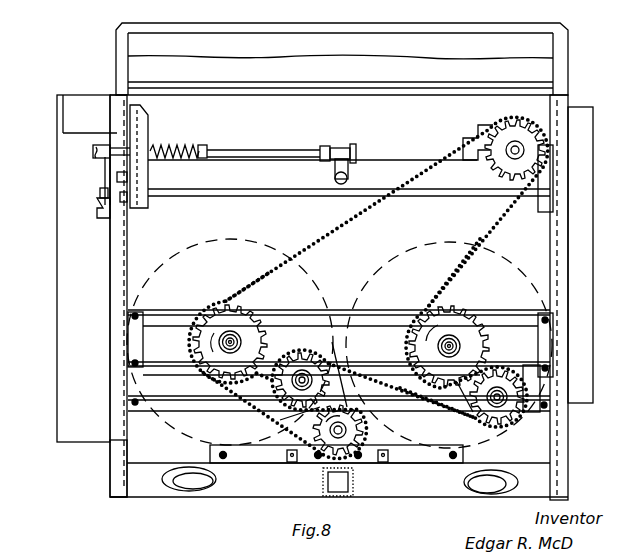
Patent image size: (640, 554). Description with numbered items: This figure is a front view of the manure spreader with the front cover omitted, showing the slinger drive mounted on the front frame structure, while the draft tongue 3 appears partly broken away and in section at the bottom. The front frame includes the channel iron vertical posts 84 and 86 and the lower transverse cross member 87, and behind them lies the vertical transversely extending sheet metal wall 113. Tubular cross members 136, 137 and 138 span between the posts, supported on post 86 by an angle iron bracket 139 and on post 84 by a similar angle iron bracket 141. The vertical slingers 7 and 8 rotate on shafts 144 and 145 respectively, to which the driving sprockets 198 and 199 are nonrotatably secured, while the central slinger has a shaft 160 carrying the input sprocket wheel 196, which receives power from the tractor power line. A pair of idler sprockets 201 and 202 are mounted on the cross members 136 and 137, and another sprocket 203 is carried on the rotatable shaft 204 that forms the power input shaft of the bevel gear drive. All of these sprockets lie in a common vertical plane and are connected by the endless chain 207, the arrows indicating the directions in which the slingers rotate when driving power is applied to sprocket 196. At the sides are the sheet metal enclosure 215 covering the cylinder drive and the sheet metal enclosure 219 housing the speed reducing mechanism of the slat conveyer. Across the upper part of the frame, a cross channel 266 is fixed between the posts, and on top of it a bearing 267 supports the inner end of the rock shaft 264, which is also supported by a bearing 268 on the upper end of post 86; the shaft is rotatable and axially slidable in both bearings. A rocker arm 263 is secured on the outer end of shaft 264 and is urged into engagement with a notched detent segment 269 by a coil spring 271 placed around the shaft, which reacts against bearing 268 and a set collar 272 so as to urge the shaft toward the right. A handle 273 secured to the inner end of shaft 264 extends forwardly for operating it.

The draft tongue 3 is at (353, 482).
The slinger 7 is at (438, 241).
The slinger 8 is at (291, 238).
The vertical post 84 is at (567, 477).
The vertical post 86 is at (113, 468).
The transverse cross member 87 is at (140, 487).
The vertical transversely extending sheet metal wall 113 is at (128, 237).
The tubular cross member 136 is at (177, 407).
The tubular cross member 137 is at (158, 370).
The tubular cross member 138 is at (153, 318).
The angle iron bracket 139 is at (136, 314).
The angle iron bracket 141 is at (538, 330).
The shaft 144 is at (453, 340).
The shaft 145 is at (227, 338).
The shaft 160 is at (312, 437).
The sprocket wheel 196 is at (363, 434).
The driving sprocket 198 is at (423, 325).
The driving sprocket 199 is at (246, 312).
The idler sprocket 201 is at (296, 356).
The idler sprocket 202 is at (497, 420).
The sprocket 203 is at (502, 128).
The rotatable shaft 204 is at (517, 146).
The endless chain 207 is at (348, 229).
The sheet metal enclosure 215 is at (590, 303).
The sheet metal enclosure 219 is at (58, 257).
The rocker arm 263 is at (105, 175).
The rock shaft 264 is at (283, 150).
The cross channel 266 is at (397, 162).
The bearing 267 is at (333, 147).
The bearing 268 is at (118, 143).
The notched detent segment 269 is at (100, 193).
The coil spring 271 is at (180, 145).
The set collar 272 is at (207, 148).
The handle 273 is at (335, 178).